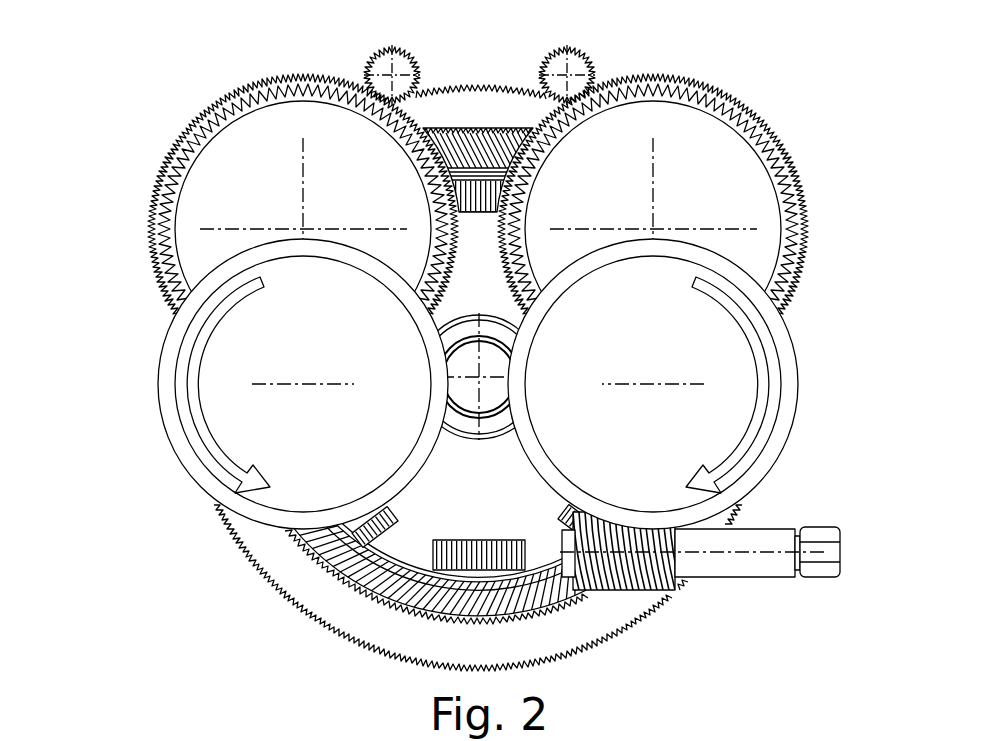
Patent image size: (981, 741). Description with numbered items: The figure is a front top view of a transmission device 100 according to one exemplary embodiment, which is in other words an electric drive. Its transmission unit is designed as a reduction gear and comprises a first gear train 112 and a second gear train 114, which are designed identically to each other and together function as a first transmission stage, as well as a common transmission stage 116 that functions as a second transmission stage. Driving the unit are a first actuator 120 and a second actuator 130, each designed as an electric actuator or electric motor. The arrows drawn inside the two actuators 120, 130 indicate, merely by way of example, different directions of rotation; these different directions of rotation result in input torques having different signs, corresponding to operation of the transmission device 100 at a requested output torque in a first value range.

The transmission device 100 is at (125, 58).
The first gear train 112 is at (760, 115).
The second gear train 114 is at (250, 78).
The common transmission stage 116 is at (312, 615).
The first actuator 120 is at (803, 405).
The second actuator 130 is at (158, 345).